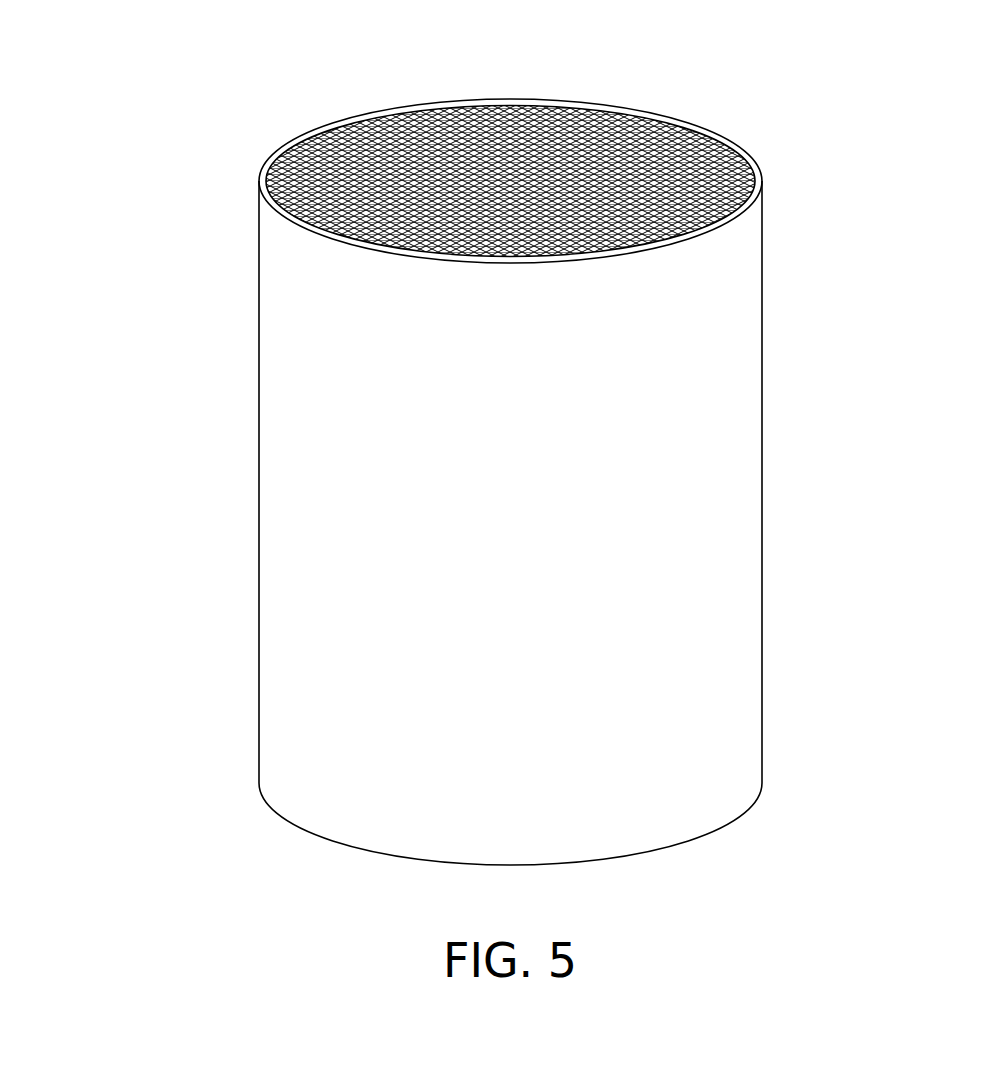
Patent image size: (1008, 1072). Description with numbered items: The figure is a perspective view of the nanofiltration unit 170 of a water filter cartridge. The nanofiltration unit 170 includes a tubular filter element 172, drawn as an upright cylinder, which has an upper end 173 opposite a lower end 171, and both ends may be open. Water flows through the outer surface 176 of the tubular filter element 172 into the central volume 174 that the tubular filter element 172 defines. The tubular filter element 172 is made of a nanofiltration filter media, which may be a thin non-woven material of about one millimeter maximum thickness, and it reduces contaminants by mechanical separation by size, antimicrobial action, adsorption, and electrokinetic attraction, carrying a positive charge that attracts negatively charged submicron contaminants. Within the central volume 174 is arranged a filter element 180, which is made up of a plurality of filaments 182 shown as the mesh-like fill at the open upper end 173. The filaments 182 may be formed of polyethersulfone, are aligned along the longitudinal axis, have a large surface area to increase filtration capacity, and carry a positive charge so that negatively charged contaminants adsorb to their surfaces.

The nanofiltration unit 170 is at (148, 402).
The lower end 171 is at (690, 841).
The tubular filter element 172 is at (670, 420).
The upper end 173 is at (762, 258).
The central volume 174 is at (704, 130).
The outer surface 176 is at (469, 600).
The filter element 180 is at (338, 116).
The filaments 182 is at (563, 148).